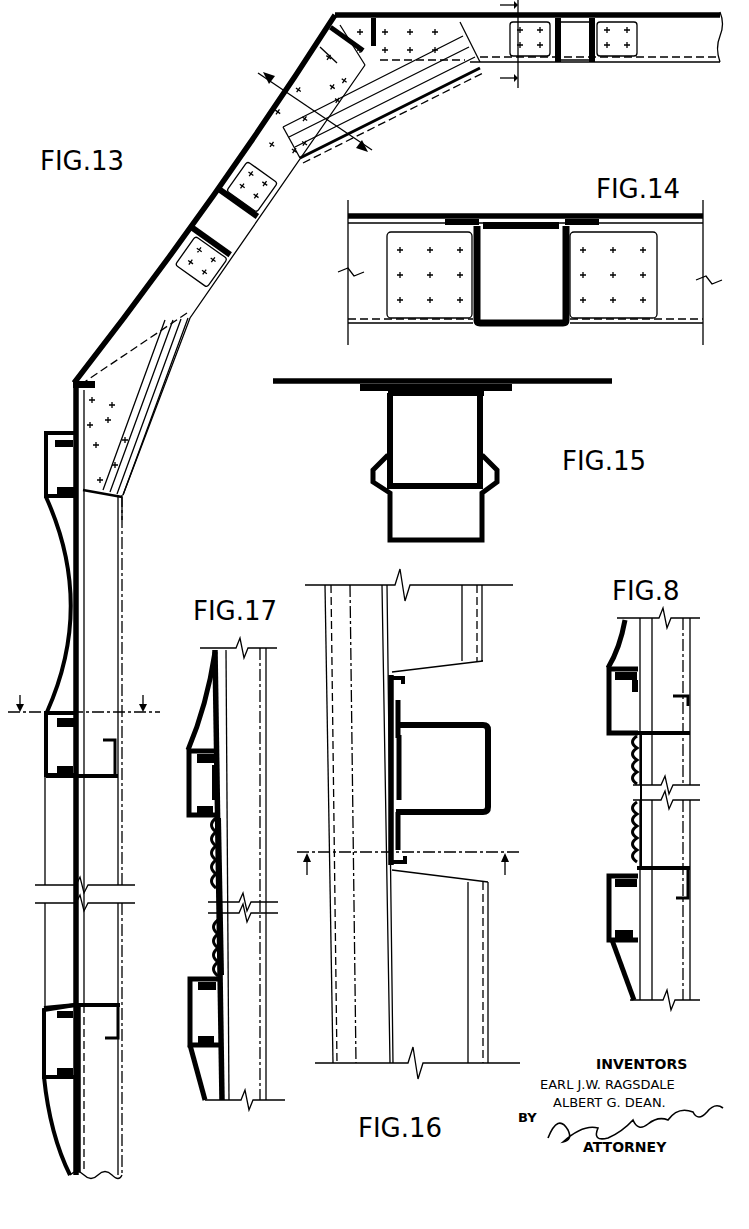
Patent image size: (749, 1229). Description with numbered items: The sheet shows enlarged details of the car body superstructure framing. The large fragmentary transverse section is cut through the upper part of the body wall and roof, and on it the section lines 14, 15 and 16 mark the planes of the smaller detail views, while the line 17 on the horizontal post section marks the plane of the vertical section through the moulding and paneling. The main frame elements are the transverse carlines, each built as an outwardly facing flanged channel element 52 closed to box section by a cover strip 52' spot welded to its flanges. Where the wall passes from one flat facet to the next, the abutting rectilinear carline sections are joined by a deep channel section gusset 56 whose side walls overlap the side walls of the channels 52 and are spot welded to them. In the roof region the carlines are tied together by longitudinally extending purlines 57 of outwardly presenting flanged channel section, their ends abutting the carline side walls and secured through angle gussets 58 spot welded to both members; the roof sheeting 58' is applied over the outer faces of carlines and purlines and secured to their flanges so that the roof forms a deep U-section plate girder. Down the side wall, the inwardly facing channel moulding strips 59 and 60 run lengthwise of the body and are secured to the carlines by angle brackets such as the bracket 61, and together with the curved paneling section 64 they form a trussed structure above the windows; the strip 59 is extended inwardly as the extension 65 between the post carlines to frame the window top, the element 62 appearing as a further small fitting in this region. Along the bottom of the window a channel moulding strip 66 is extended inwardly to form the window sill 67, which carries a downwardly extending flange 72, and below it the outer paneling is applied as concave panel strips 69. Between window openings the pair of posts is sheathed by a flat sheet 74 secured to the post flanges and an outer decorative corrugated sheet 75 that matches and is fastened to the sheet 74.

In FIG. 13, the section line 14— 14 is at (499, 45).
In FIG. 13, the section line 15— 15 is at (330, 98).
In FIG. 13, the section line 16— 16 is at (84, 692).
In FIG. 16, the section line 17— 17 is at (408, 875).
In FIG. 13, the flanged channel element 52 is at (333, 598).
In FIG. 14, the flanged channel element 52 is at (524, 289).
In FIG. 15, the flanged channel element 52 is at (435, 439).
In FIG. 17, the flanged channel element 52 is at (278, 874).
In FIG. 16, the flanged channel element 52 is at (458, 768).
In FIG. 14, the cover strip 52' is at (522, 205).
In FIG. 15, the cover strip 52' is at (436, 402).
In FIG. 17, the cover strip 52' is at (222, 890).
In FIG. 16, the cover strip 52' is at (415, 770).
In FIG. 13, the deep channel section gusset 56 is at (405, 85).
In FIG. 15, the deep channel section gusset 56 is at (388, 513).
In FIG. 13, the purline 57 is at (228, 243).
In FIG. 14, the purline 57 is at (368, 322).
In FIG. 13, the angle gusset 58 is at (369, 252).
In FIG. 14, the angle gusset 58 is at (522, 292).
In FIG. 13, the roof sheeting 58' is at (396, 595).
In FIG. 14, the roof sheeting 58' is at (525, 203).
In FIG. 15, the roof sheeting 58' is at (442, 362).
In FIG. 13, the moulding strip 59 is at (45, 757).
In FIG. 17, the moulding strip 59 is at (189, 806).
In FIG. 16, the moulding strip 59 is at (334, 1012).
In FIG. 13, the upper moulding strip 60 is at (45, 466).
In FIG. 13, the angle bracket 61 is at (56, 491).
In FIG. 16, the angle bracket 61 is at (368, 1063).
In FIG. 13, the spacer strip 62 is at (64, 438).
In FIG. 13, the curved paneling section 64 is at (64, 572).
In FIG. 13, the inward extension 65 is at (100, 779).
In FIG. 16, the inward extension 65 is at (455, 650).
In FIG. 8, the inward extension 65 is at (668, 738).
In FIG. 13, the moulding strip 66 is at (44, 1036).
In FIG. 17, the moulding strip 66 is at (190, 1000).
In FIG. 13, the window sill 67 is at (96, 1004).
In FIG. 8, the window sill 67 is at (672, 870).
In FIG. 13, the concave panel strip 69 is at (60, 1131).
In FIG. 17, the concave panel strip 69 is at (198, 740).
In FIG. 13, the downwardly extending flange 72 is at (120, 1030).
In FIG. 8, the downwardly extending flange 72 is at (690, 894).
In FIG. 17, the flat sheet 74 is at (222, 852).
In FIG. 8, the flat sheet 74 is at (645, 772).
In FIG. 17, the outer decorative corrugated sheet 75 is at (212, 853).
In FIG. 8, the outer decorative corrugated sheet 75 is at (632, 777).